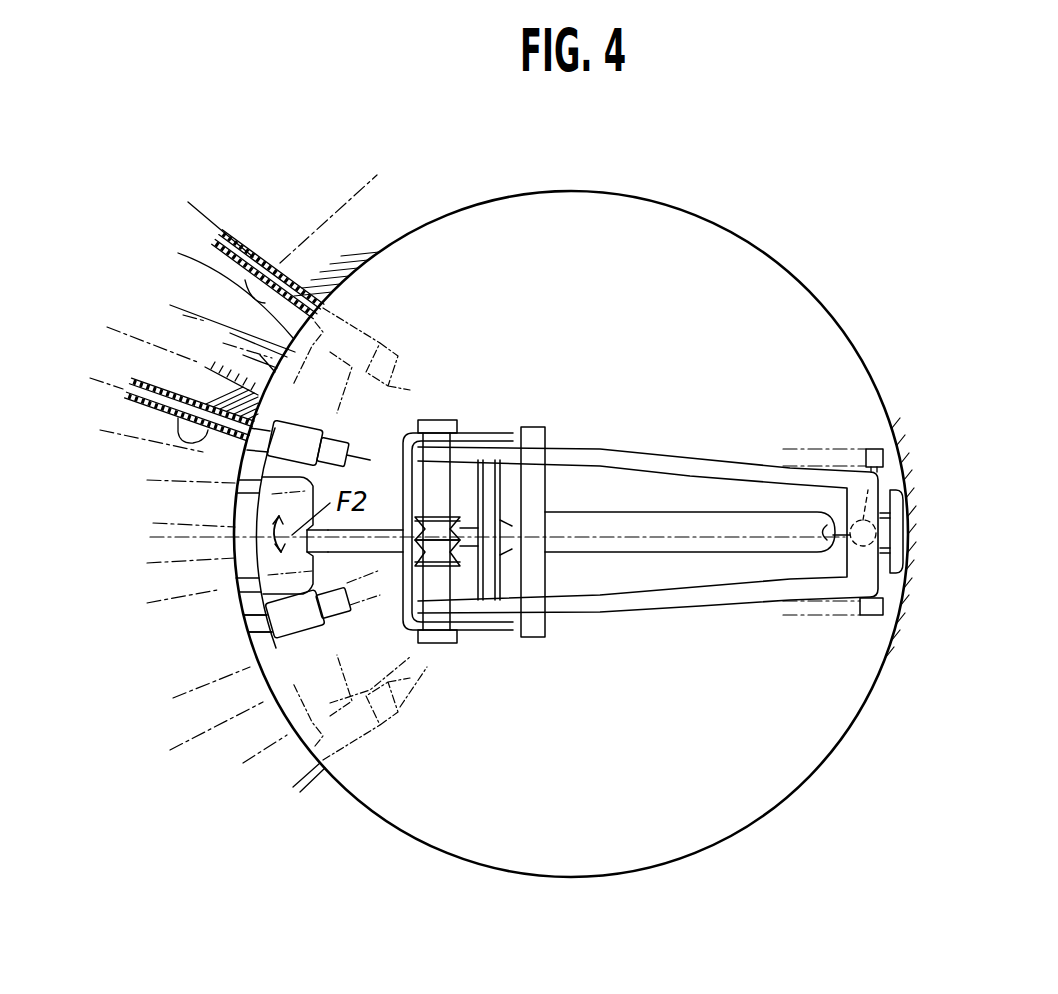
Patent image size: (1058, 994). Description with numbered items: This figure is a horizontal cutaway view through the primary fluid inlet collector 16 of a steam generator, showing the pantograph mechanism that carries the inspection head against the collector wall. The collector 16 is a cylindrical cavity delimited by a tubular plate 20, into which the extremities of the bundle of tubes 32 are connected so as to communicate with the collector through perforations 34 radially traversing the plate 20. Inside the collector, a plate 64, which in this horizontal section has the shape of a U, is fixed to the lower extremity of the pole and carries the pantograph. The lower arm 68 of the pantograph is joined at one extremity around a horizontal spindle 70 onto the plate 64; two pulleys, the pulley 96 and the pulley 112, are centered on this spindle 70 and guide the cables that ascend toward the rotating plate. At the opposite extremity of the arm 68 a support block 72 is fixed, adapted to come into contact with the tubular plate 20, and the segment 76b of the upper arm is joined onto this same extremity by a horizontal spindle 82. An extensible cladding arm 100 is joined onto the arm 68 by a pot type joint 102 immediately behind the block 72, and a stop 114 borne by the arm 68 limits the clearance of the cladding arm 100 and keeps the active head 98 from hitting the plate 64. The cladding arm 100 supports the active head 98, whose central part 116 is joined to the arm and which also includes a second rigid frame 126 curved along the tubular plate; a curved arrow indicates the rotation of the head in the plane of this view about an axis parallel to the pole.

The primary fluid inlet collector 16 is at (571, 534).
The tubular plate 20 is at (335, 255).
The bundle of tubes 32 is at (232, 230).
The perforations 34 is at (172, 392).
The plate 64 is at (394, 462).
The horizontal spindle 70 is at (445, 477).
The pulley 112 is at (452, 517).
The pulley 96 is at (455, 568).
The lower arm 68 is at (652, 460).
The segment 76b is at (837, 447).
The horizontal spindle 82 is at (864, 622).
The support block 72 is at (908, 550).
The pot type joint 102 is at (905, 430).
The extensible cladding arm 100 is at (705, 555).
The stop 114 is at (537, 580).
The central part 116 is at (258, 540).
The second rigid frame 126 is at (262, 658).
The active head 98 is at (303, 636).